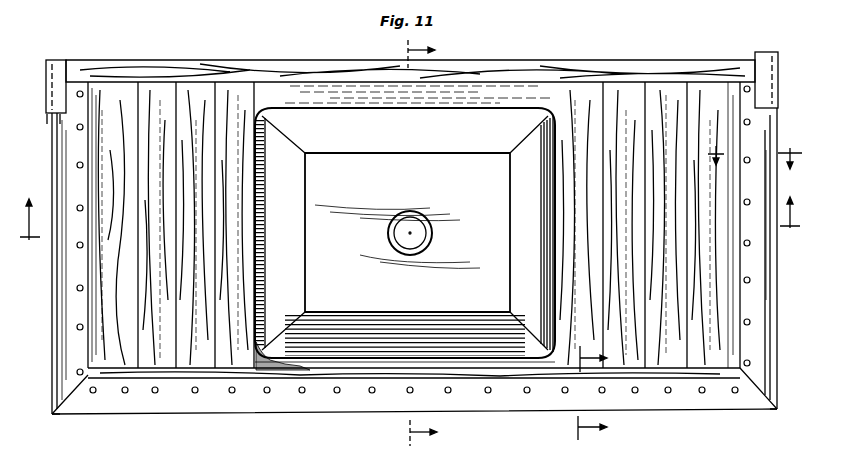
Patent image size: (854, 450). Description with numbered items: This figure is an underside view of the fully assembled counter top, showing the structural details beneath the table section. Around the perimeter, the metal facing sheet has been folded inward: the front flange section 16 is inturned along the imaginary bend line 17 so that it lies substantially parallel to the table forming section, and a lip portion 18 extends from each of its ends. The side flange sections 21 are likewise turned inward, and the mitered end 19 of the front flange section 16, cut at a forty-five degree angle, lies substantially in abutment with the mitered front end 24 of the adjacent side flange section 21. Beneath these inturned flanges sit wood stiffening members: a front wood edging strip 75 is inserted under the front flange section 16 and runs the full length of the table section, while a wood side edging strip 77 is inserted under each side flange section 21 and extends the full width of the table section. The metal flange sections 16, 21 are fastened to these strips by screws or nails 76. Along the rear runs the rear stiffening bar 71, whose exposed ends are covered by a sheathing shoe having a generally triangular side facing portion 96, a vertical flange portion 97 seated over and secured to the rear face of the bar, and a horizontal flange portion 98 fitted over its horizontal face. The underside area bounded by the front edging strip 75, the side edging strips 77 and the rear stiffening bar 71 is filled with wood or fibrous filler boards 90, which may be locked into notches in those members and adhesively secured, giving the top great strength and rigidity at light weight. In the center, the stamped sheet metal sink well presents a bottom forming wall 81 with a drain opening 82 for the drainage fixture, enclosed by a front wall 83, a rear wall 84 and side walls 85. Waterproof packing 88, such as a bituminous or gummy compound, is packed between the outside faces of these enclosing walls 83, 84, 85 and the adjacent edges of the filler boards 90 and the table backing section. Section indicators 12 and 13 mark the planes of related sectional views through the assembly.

The rear stiffening bar 71 is at (212, 80).
The vertical flange portion 97 is at (57, 61).
The horizontal flange portion 98 is at (50, 73).
The side facing portion 96 is at (47, 95).
The side flange section 21 is at (60, 351).
The front flange section 16 is at (230, 404).
The front end of side flange section 24 is at (58, 412).
The end of front flange section 19 is at (58, 414).
The screws or nails 76 is at (78, 289).
The wood side edging strip 77 is at (97, 180).
The filler boards 90 is at (409, 225).
The rear wall 84 is at (405, 222).
The side walls 85 is at (406, 234).
The front wall 83 is at (409, 335).
The bottom forming wall 81 is at (397, 252).
The drain opening 82 is at (432, 239).
The waterproof packing 88 is at (262, 331).
The front wood edging strip 75 is at (316, 376).
The section line 13 is at (435, 243).
The section line 12 is at (409, 229).
The lip portion 18 is at (749, 143).
The imaginary bend line 17 is at (579, 389).